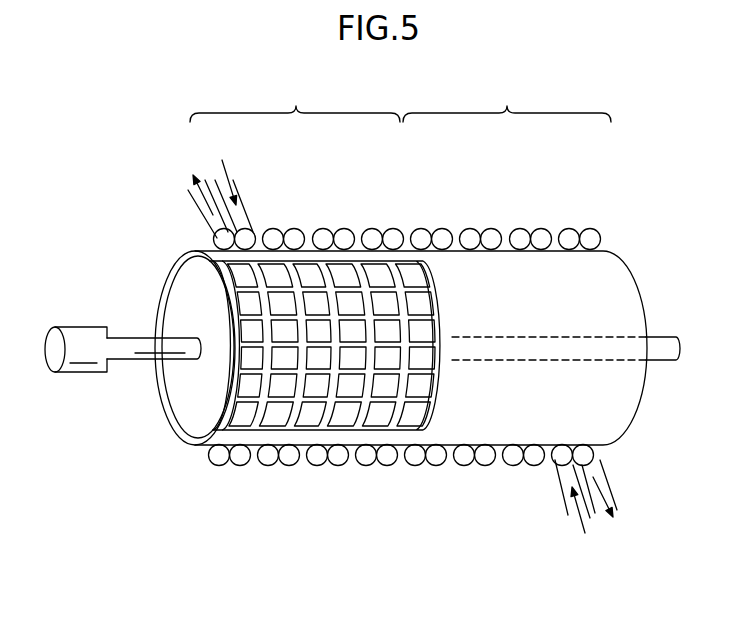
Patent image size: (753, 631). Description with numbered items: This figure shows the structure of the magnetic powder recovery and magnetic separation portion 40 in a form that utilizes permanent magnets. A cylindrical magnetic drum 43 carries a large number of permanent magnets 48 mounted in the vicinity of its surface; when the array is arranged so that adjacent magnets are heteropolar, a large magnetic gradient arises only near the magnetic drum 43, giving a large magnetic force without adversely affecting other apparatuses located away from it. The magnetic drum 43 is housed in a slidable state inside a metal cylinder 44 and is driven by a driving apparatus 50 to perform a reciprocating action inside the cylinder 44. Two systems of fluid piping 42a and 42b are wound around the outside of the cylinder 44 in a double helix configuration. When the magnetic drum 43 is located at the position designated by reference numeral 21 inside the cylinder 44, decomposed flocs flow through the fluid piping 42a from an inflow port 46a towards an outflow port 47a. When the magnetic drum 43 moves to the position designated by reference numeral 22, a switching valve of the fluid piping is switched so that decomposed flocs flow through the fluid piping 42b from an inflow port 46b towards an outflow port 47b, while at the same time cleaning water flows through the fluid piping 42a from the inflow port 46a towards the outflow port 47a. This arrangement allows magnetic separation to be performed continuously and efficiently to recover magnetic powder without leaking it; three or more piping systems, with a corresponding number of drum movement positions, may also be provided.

The position 21 is at (295, 96).
The position 22 is at (507, 96).
The magnetic powder recovery and magnetic separation portion 40 is at (480, 611).
The fluid piping 42a is at (462, 461).
The fluid piping 42b is at (487, 465).
The magnetic drum 43 is at (190, 403).
The metal cylinder 44 is at (634, 279).
The inflow port 46a is at (574, 515).
The inflow port 46b is at (235, 180).
The outflow port 47a is at (188, 188).
The outflow port 47b is at (622, 510).
The permanent magnets 48 is at (310, 417).
The driving apparatus 50 is at (130, 353).